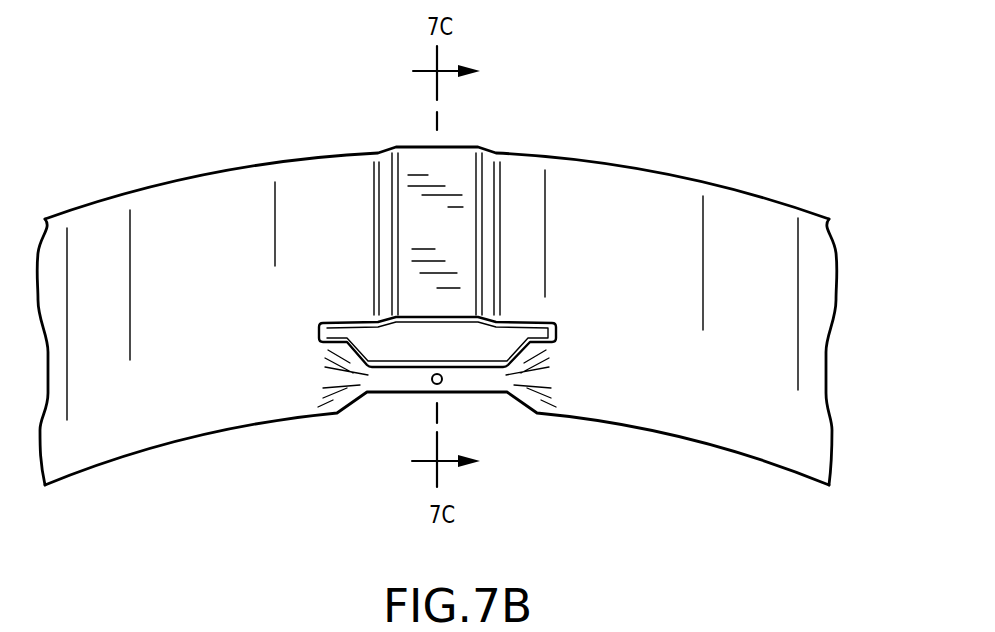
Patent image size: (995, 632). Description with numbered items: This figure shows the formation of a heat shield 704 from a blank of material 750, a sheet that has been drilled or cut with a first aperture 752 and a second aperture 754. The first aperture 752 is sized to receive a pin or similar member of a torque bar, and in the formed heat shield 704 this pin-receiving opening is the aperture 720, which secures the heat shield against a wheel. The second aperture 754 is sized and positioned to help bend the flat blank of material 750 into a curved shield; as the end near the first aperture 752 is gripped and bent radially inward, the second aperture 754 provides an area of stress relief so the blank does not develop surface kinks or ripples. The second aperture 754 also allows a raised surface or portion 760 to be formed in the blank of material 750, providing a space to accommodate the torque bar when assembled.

The heat shield 704 is at (836, 297).
The blank of material 750 is at (833, 428).
The raised surface or portion 760 is at (486, 224).
The second aperture 754 is at (554, 328).
The first aperture 752 is at (443, 381).
The aperture 720 is at (433, 384).